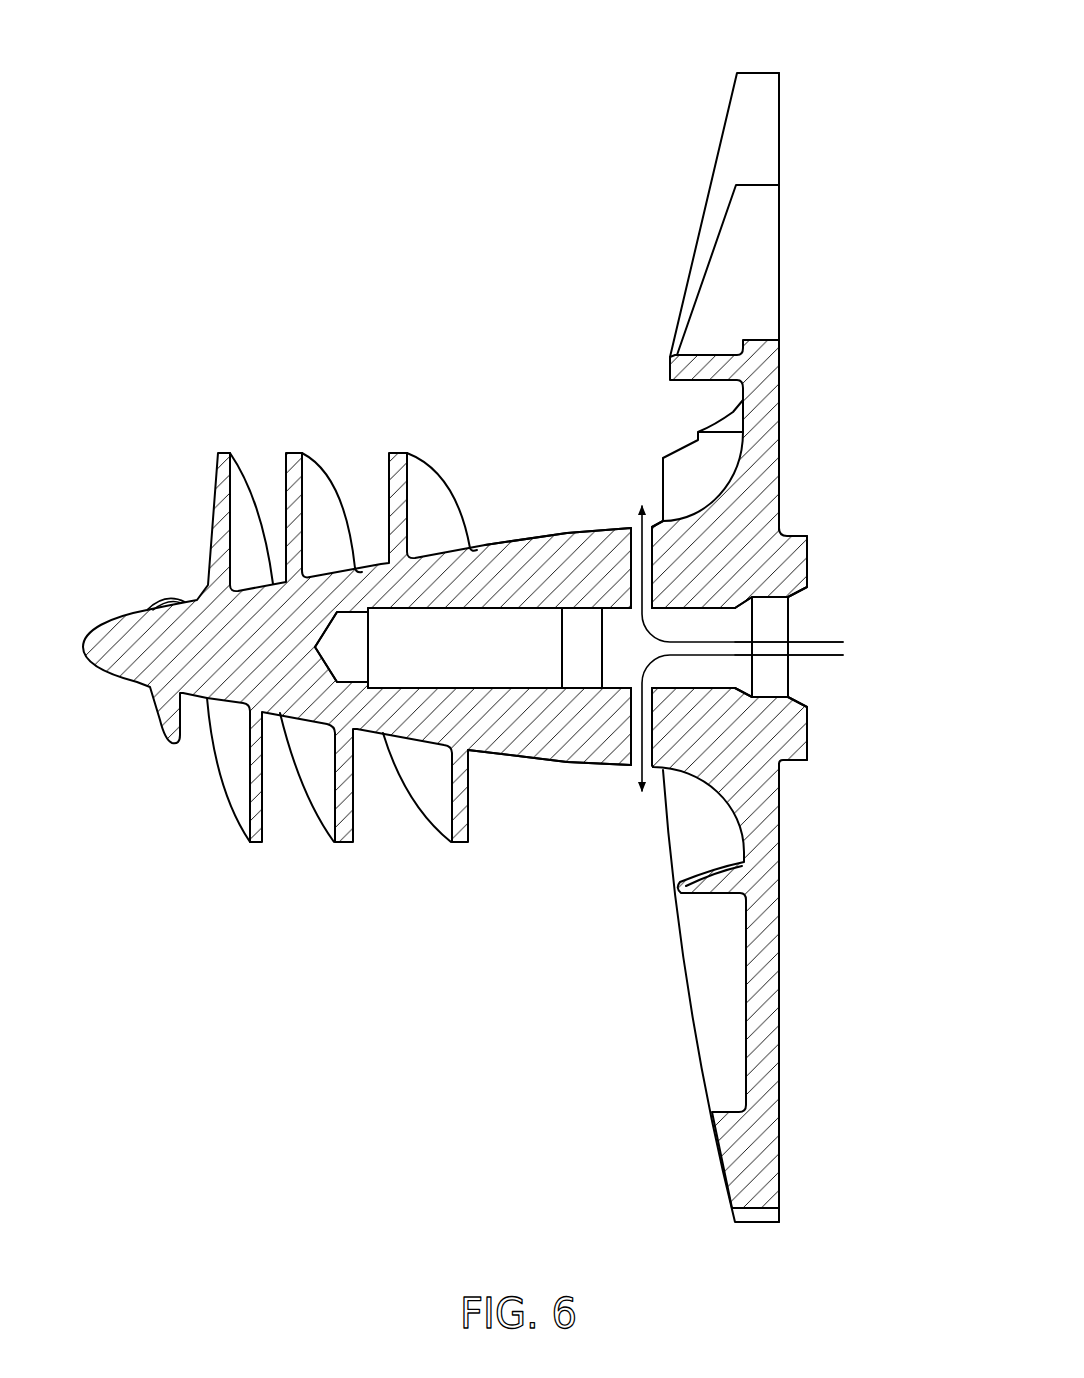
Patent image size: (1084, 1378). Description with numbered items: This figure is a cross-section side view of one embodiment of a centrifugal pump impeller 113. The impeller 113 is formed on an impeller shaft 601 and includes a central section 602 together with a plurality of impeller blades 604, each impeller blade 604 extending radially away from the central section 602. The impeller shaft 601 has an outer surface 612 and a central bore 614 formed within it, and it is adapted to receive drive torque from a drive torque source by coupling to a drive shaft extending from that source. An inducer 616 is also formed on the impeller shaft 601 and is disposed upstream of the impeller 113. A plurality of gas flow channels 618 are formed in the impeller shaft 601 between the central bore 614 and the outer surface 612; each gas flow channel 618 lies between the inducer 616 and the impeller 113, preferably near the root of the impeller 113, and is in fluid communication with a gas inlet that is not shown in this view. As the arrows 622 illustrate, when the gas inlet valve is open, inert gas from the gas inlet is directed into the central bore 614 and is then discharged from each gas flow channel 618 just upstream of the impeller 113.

The impeller 113 is at (823, 369).
The impeller shaft 601 is at (577, 530).
The central section 602 is at (808, 563).
The impeller blades 604 is at (770, 73).
The outer surface 612 is at (508, 541).
The central bore 614 is at (492, 664).
The inducer 616 is at (335, 446).
The gas flow channels 618 is at (628, 528).
The arrows 622 is at (827, 642).